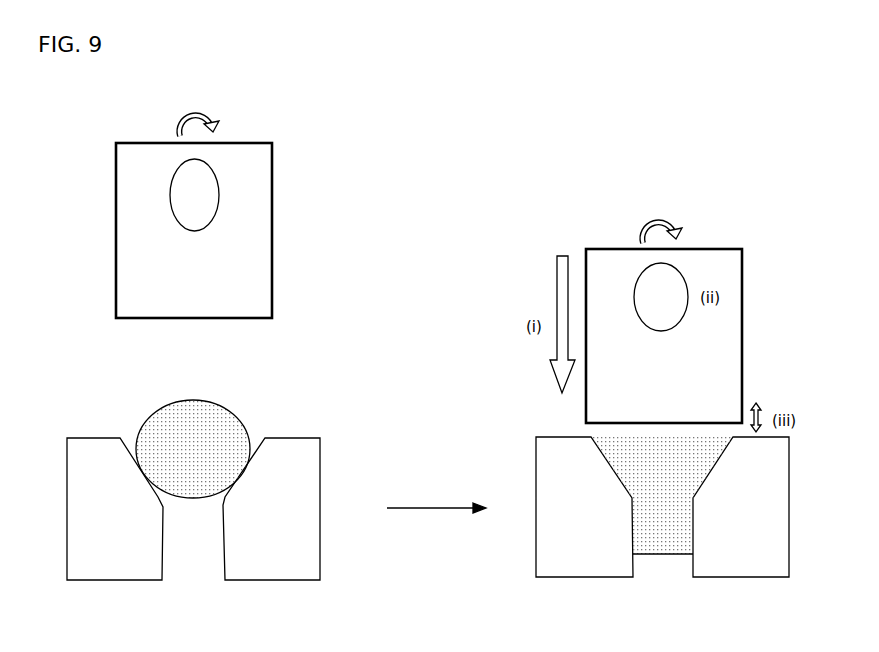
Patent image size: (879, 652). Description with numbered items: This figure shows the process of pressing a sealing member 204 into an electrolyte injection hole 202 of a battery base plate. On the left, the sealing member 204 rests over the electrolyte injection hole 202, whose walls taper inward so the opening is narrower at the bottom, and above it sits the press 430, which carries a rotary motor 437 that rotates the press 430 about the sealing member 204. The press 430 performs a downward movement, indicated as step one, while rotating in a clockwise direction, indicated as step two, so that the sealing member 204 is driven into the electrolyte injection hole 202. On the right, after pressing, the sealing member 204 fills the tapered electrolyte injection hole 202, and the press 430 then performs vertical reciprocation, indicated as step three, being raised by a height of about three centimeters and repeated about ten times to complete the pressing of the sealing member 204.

The electrolyte injection hole 202 is at (592, 450).
The sealing member 204 is at (190, 413).
The press 430 is at (172, 278).
The rotary motor 437 is at (170, 197).